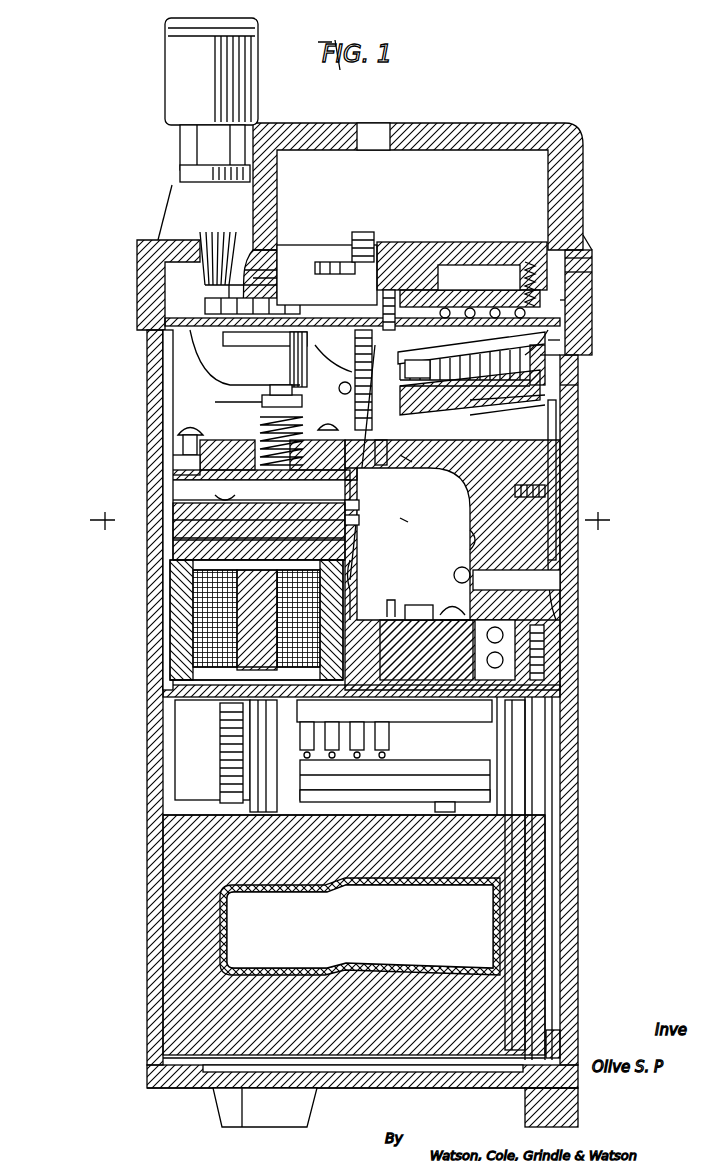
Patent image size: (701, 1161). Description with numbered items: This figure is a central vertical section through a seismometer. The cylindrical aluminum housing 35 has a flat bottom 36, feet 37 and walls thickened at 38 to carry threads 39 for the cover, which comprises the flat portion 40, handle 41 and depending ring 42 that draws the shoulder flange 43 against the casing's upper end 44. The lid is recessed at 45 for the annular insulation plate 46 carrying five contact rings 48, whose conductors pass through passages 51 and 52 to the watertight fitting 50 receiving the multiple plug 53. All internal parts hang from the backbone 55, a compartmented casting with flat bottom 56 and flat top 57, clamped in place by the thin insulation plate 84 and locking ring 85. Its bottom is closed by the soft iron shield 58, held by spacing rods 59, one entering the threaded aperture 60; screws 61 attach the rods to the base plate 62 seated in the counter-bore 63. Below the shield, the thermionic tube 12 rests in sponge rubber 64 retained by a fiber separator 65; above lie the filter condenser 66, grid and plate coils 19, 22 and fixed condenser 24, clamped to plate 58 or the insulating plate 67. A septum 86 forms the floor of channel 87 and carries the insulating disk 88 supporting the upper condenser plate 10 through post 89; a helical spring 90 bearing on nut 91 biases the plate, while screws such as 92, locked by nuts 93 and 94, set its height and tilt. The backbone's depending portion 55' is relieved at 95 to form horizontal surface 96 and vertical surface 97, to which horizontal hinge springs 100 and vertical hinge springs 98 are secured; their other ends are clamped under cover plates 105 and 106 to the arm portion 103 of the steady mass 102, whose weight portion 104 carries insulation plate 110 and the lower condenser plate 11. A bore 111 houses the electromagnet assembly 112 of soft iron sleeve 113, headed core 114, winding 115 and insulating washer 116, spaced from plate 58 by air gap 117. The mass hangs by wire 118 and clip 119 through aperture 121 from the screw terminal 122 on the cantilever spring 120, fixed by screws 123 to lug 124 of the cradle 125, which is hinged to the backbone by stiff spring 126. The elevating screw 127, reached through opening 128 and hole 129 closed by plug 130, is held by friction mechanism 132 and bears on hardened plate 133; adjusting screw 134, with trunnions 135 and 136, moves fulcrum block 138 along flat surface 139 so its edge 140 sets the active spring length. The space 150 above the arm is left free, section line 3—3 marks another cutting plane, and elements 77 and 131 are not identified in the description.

The section line 3- 3 is at (350, 521).
The upper condenser plate 10 is at (359, 507).
The lower condenser plate 11 is at (359, 527).
The thermionic tube 12 is at (360, 926).
The grid coil 19 is at (495, 752).
The plate coil 22 is at (568, 875).
The fixed condenser 24 is at (405, 793).
The outer casing or housing 35 is at (190, 782).
The flat bottom 36 is at (365, 1090).
The projecting feet 37 is at (285, 1112).
The thickened top portion 38 is at (595, 300).
The threads 39 is at (185, 283).
The flat portion 40 is at (470, 248).
The handle 41 is at (520, 128).
The depending ring 42 is at (598, 274).
The shoulder flange 43 is at (583, 235).
The upper end of casing 44 is at (598, 262).
The recess 45 is at (545, 290).
The annular insulation plate 46 is at (446, 264).
The contact rings 48 is at (478, 324).
The fitting 50 is at (200, 140).
The passage 51 is at (293, 243).
The passage 52 is at (248, 207).
The multiple plug 53 is at (190, 76).
The backbone 55 is at (586, 480).
The depending portion of backbone 55' is at (600, 579).
The flat bottom of backbone 56 is at (545, 642).
The flat top of backbone 57 is at (185, 335).
The cover plate and shield 58 is at (190, 718).
The spacing rods 59 is at (555, 765).
The threaded aperture 60 is at (515, 630).
The screws 61 is at (560, 1045).
The base plate 62 is at (465, 1067).
The counter-bore 63 is at (208, 1080).
The sponge rubber mass 64 is at (190, 1010).
The fiber separator 65 is at (549, 795).
The filter condenser 66 is at (200, 815).
The insulating plate 67 is at (510, 704).
The block 77 is at (295, 358).
The insulation plate 84 is at (452, 324).
The locking ring 85 is at (195, 321).
The septum 86 is at (232, 455).
The channel 87 is at (165, 400).
The insulating disk 88 is at (175, 474).
The post 89 is at (357, 480).
The helical spring 90 is at (355, 420).
The nut 91 is at (282, 395).
The adjusting screw 92 is at (198, 420).
The nut 93 is at (180, 499).
The nut 94 is at (175, 457).
The relief 95 is at (460, 607).
The overhanging surface 96 is at (475, 586).
The vertical surface 97 is at (457, 540).
The vertical hinge springs 98 is at (448, 566).
The horizontal hinge springs 100 is at (468, 699).
The steady mass 102 is at (388, 615).
The arm portion 103 is at (440, 699).
The weight portion 104 is at (185, 605).
The cover plates 105 is at (445, 606).
The cover plates 106 is at (490, 738).
The insulation plate 110 is at (185, 545).
The bore 111 is at (185, 570).
The electromagnet assembly 112 is at (200, 640).
The soft iron sleeve 113 is at (200, 620).
The headed core 114 is at (185, 660).
The magnet wire winding 115 is at (190, 688).
The insulating washer 116 is at (195, 700).
The air gap 117 is at (275, 712).
The wire 118 is at (419, 482).
The clip 119 is at (352, 568).
The cantilever spring 120 is at (545, 342).
The aperture 121 is at (408, 462).
The screw terminal 122 is at (388, 345).
The screws 123 is at (570, 358).
The lug 124 is at (578, 386).
The cradle 125 is at (545, 422).
The stiff spring 126 is at (556, 478).
The elevating screw 127 is at (352, 362).
The opening 128 is at (334, 262).
The hole 129 is at (375, 124).
The plug and gasket 130 is at (368, 240).
The link rod 131 is at (377, 462).
The friction mechanism 132 is at (355, 365).
The hardened plate 133 is at (325, 388).
The adjusting screw 134 is at (560, 345).
The reduced end 135 is at (414, 369).
The reduced end 136 is at (548, 406).
The fulcrum block 138 is at (480, 372).
The flat surface 139 is at (548, 440).
The fulcrum edge 140 is at (490, 358).
The space 150 is at (418, 524).